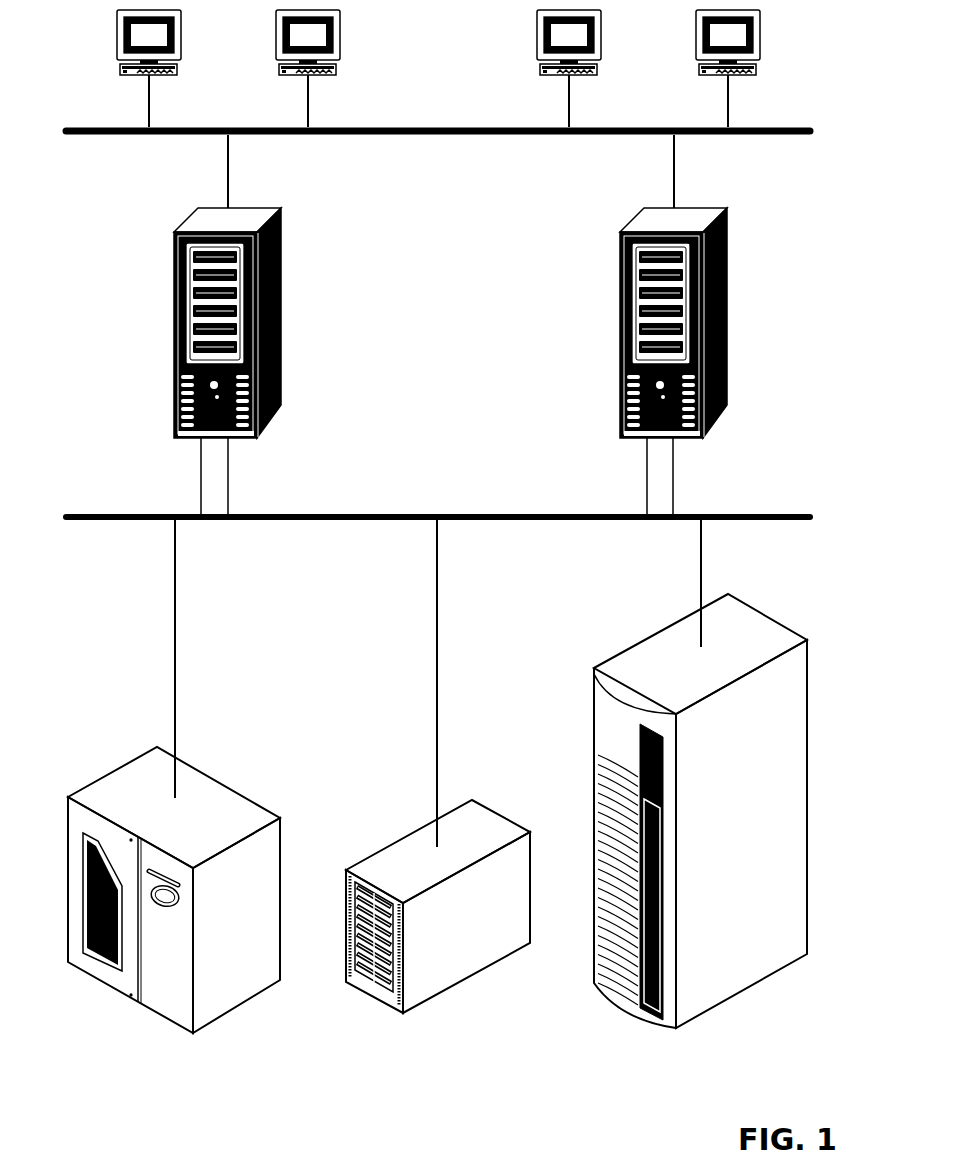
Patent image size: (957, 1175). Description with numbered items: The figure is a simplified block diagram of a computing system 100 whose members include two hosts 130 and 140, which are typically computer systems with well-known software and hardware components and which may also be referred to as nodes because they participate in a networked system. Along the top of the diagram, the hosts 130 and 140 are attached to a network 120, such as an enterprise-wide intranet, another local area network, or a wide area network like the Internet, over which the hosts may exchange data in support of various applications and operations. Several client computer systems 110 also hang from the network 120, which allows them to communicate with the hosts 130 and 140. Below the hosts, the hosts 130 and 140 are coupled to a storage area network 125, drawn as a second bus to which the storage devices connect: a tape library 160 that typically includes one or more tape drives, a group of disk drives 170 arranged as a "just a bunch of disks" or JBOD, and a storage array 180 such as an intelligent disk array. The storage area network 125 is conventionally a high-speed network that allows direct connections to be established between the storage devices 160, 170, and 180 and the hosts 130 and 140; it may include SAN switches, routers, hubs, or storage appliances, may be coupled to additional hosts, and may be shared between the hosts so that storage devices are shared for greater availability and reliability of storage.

The computing system 100 is at (330, 1108).
The client computer systems 110 is at (760, 38).
The network 120 is at (775, 134).
The storage area network (SAN) 125 is at (726, 513).
The host 130 is at (174, 327).
The host 140 is at (620, 327).
The tape library 160 is at (210, 796).
The group of disk drives 170 is at (472, 823).
The storage array 180 is at (808, 827).